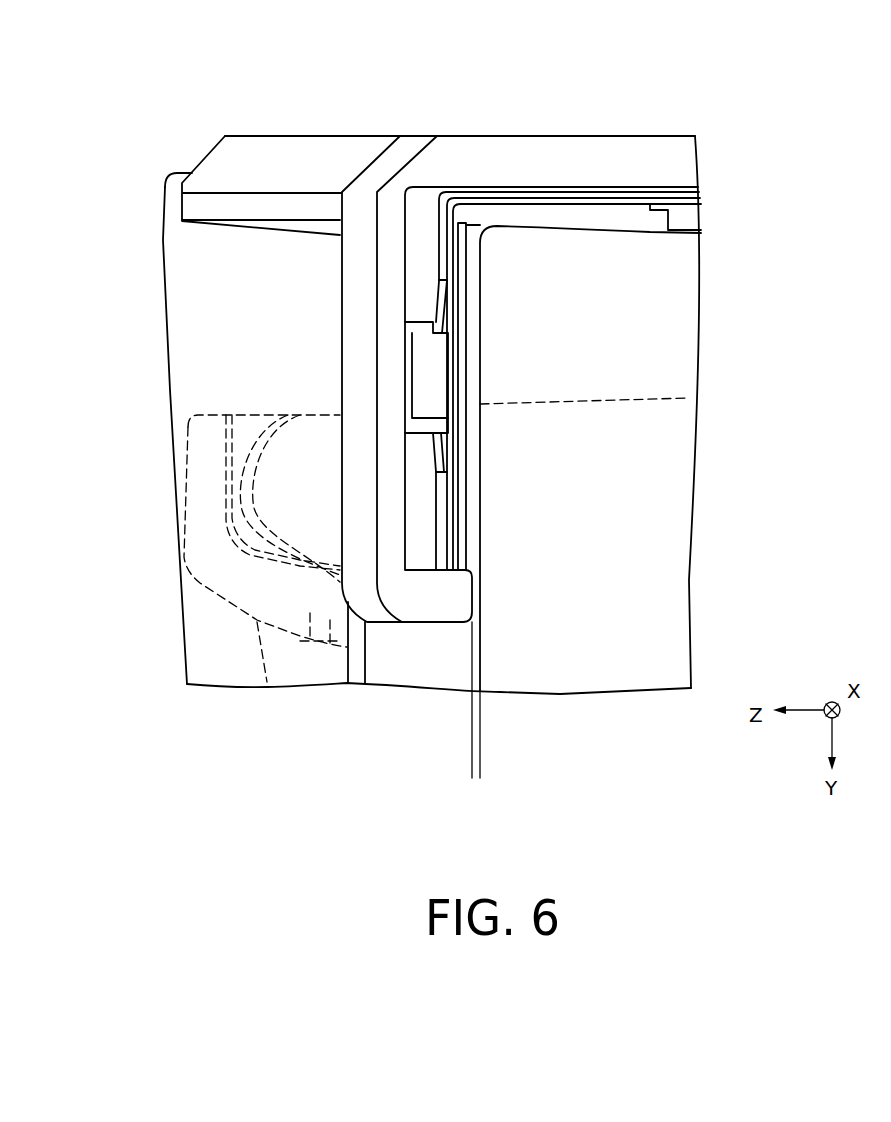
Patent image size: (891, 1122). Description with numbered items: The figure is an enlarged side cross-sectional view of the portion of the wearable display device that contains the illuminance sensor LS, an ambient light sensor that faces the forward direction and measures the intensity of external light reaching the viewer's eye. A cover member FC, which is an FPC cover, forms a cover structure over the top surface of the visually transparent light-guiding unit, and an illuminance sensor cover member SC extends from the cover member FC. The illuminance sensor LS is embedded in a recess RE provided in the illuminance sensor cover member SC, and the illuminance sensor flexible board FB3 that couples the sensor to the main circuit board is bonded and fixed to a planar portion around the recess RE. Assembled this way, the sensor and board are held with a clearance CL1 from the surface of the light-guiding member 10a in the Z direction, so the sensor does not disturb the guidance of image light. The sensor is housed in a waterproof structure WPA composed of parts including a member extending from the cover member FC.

The waterproof structure WPA is at (409, 126).
The illuminance sensor cover member SC is at (393, 268).
The cover member FC is at (604, 146).
The illuminance sensor flexible board FB3 is at (457, 270).
The recess RE is at (452, 322).
The illuminance sensor LS is at (428, 380).
The light-guiding member 10a is at (575, 680).
The clearance CL1 is at (512, 774).